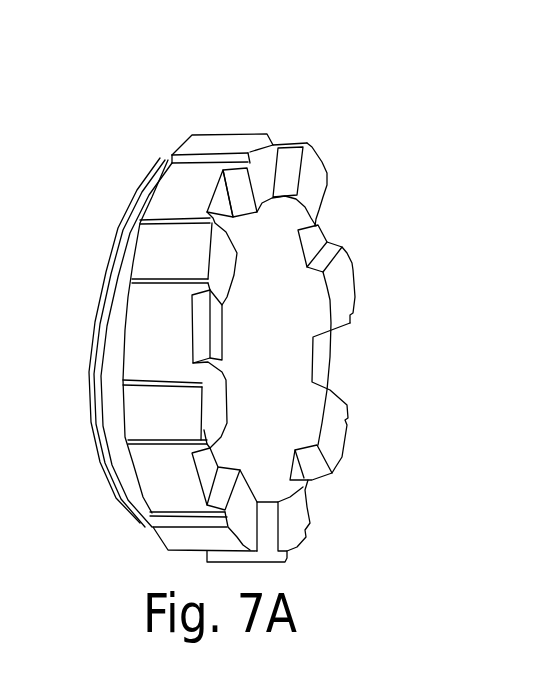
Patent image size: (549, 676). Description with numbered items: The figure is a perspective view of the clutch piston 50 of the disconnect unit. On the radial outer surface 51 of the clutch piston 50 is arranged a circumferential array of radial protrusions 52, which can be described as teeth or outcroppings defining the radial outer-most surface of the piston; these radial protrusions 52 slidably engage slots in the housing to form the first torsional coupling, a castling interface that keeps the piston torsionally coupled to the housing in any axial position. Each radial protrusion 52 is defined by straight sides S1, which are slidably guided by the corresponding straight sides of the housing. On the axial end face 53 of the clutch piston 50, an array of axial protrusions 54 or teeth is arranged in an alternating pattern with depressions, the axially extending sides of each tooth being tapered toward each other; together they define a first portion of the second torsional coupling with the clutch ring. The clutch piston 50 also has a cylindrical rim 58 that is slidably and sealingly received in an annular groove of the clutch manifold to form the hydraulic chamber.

The clutch piston 50 is at (290, 108).
The radial outer surface 51 is at (171, 360).
The radial protrusions 52 is at (207, 137).
The axial end face 53 is at (322, 360).
The axial protrusions 54 is at (332, 440).
The cylindrical rim 58 is at (141, 197).
The straight sides S1 is at (162, 218).